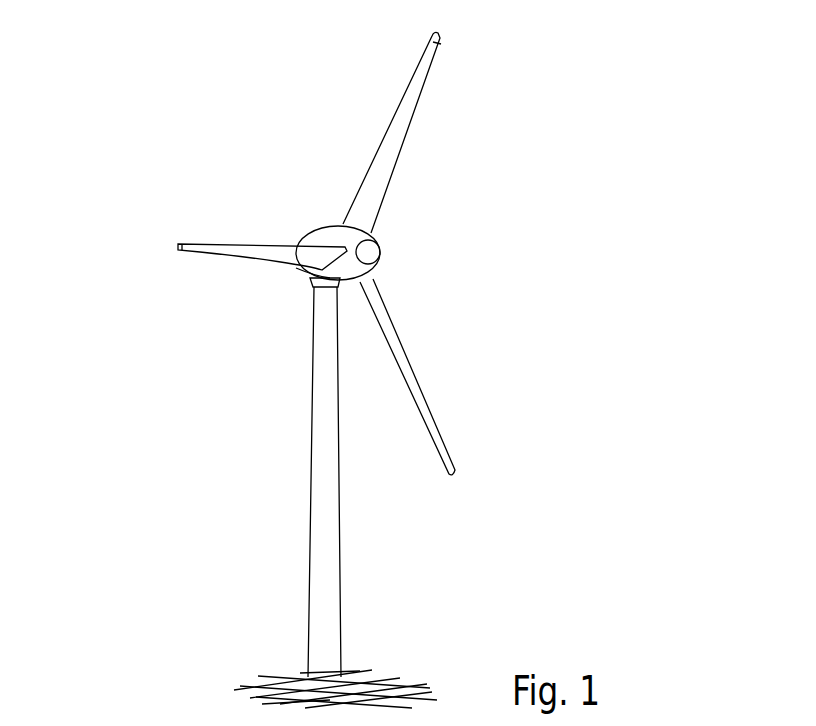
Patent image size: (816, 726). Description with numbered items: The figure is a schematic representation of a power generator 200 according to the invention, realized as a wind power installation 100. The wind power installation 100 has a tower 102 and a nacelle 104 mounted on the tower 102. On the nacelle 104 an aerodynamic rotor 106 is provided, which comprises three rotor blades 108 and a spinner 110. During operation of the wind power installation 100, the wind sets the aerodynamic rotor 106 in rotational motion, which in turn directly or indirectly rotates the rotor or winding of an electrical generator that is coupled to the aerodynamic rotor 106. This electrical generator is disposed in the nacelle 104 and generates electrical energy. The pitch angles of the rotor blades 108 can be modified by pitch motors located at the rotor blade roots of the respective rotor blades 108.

The wind power installation 100 is at (285, 326).
The tower 102 is at (330, 542).
The nacelle 104 is at (322, 237).
The aerodynamic rotor 106 is at (424, 205).
The rotor blades 108 is at (387, 150).
The spinner 110 is at (371, 252).
The power generator 200 is at (172, 575).